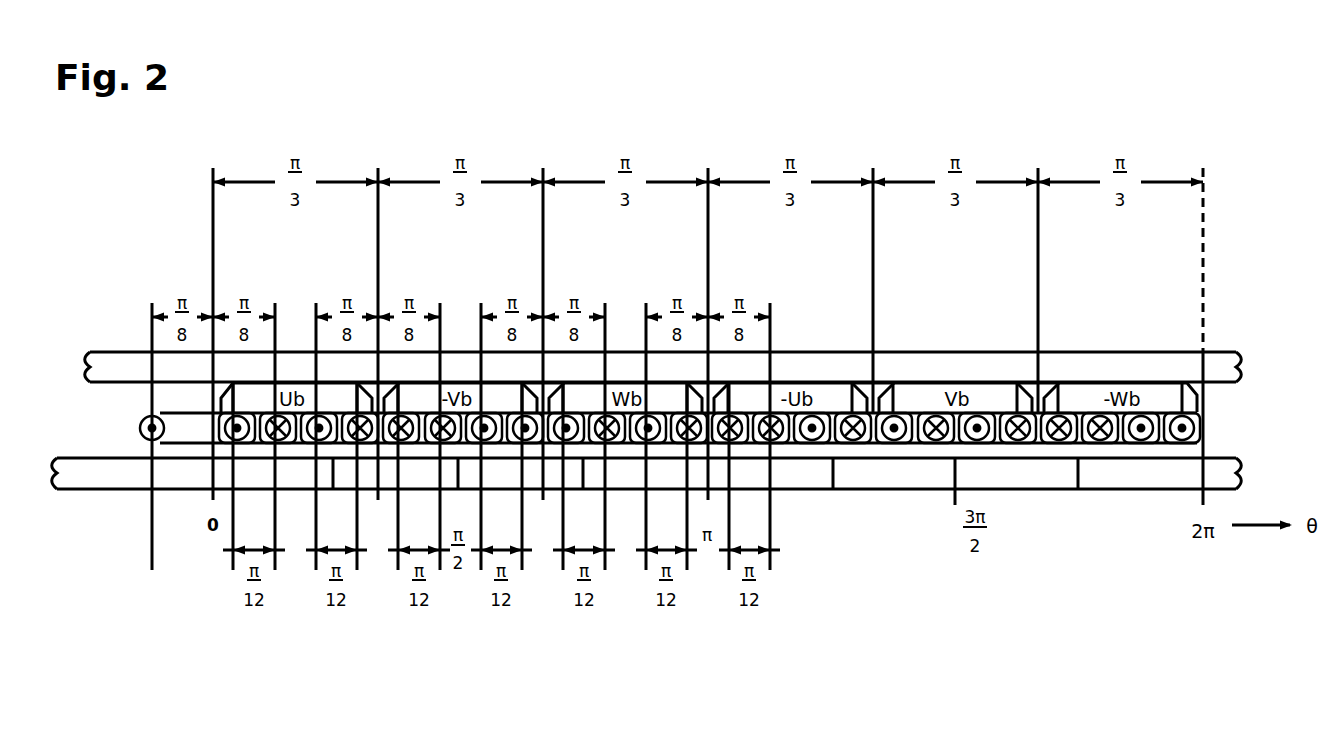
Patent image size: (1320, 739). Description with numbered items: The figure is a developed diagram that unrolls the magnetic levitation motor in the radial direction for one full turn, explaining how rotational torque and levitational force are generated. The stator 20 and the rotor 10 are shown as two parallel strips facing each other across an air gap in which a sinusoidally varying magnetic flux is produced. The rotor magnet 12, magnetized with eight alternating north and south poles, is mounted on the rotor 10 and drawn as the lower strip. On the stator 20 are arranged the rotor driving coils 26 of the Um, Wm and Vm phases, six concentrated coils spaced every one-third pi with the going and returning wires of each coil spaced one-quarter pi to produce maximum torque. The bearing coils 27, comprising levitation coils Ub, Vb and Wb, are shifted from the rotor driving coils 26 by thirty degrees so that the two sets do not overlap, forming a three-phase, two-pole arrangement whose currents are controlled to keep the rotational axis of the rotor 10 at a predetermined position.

The rotor 10 is at (665, 436).
The rotor magnet 12 is at (1093, 494).
The stator 20 is at (1120, 340).
The rotor driving coils 26 is at (130, 426).
The bearing coils 27 is at (1210, 426).